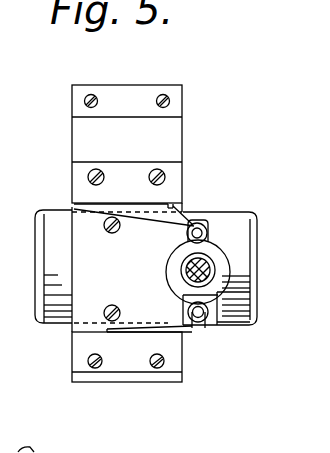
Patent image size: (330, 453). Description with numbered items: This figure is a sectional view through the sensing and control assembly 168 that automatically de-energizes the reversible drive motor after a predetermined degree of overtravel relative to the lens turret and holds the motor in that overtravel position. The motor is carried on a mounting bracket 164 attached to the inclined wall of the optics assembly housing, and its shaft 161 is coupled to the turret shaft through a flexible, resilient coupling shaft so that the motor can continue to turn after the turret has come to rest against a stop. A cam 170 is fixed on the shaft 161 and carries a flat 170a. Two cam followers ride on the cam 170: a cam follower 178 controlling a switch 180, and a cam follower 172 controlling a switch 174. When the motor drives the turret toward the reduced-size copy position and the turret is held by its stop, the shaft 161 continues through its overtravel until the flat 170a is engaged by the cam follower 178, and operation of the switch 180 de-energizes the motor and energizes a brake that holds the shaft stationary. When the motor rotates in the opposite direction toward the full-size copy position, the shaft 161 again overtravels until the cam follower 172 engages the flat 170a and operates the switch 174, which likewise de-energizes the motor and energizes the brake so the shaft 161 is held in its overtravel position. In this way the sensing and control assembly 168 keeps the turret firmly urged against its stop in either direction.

The mounting bracket 164 is at (168, 135).
The switch 180 is at (79, 185).
The switch 174 is at (137, 362).
The cam 170 is at (175, 277).
The shaft 161 is at (207, 270).
The sensing and control assembly 168 is at (245, 195).
The cam follower 178 is at (198, 222).
The flat 170a is at (210, 240).
The cam follower 172 is at (200, 322).